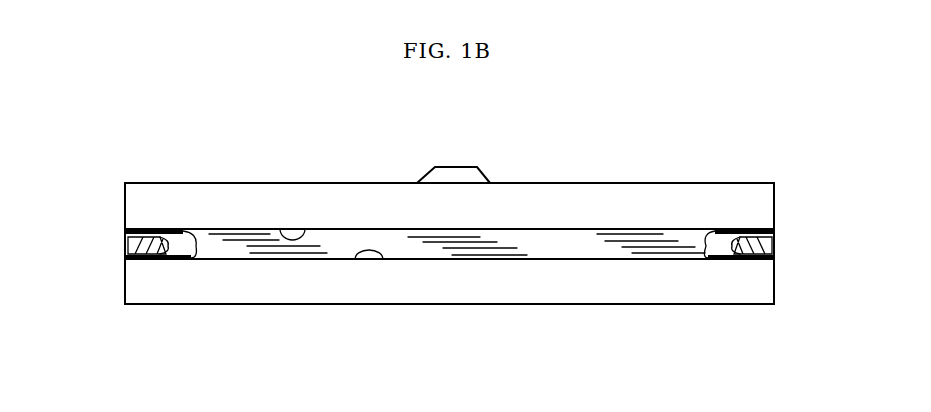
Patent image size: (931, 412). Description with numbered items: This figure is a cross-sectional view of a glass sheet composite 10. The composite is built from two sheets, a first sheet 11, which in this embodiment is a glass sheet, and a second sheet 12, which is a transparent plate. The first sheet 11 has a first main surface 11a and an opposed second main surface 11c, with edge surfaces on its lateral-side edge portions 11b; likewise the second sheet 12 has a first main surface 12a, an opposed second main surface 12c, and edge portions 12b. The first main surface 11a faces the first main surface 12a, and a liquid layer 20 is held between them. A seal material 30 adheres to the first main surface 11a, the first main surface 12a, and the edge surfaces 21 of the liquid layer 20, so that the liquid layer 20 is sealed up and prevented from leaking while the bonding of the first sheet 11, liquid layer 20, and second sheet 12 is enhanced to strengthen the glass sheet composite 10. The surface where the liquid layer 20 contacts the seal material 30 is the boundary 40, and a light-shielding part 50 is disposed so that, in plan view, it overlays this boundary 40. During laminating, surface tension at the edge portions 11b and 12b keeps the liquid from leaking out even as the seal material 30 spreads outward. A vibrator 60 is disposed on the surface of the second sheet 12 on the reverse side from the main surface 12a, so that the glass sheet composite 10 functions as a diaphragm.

The glass sheet composite 10 is at (366, 160).
The first sheet 11 is at (578, 292).
The first main surface 11a is at (368, 259).
The edge portions 11b is at (125, 292).
The second main surface 11c is at (472, 304).
The second sheet 12 is at (663, 197).
The first main surface 12a is at (291, 240).
The edge portions 12b is at (125, 191).
The second main surface 12c is at (335, 183).
The liquid layer 20 is at (595, 240).
The edge surfaces 21 is at (196, 262).
The seal material 30 is at (150, 262).
The boundary 40 is at (192, 229).
The light-shielding part 50 is at (125, 257).
The vibrator 60 is at (472, 167).